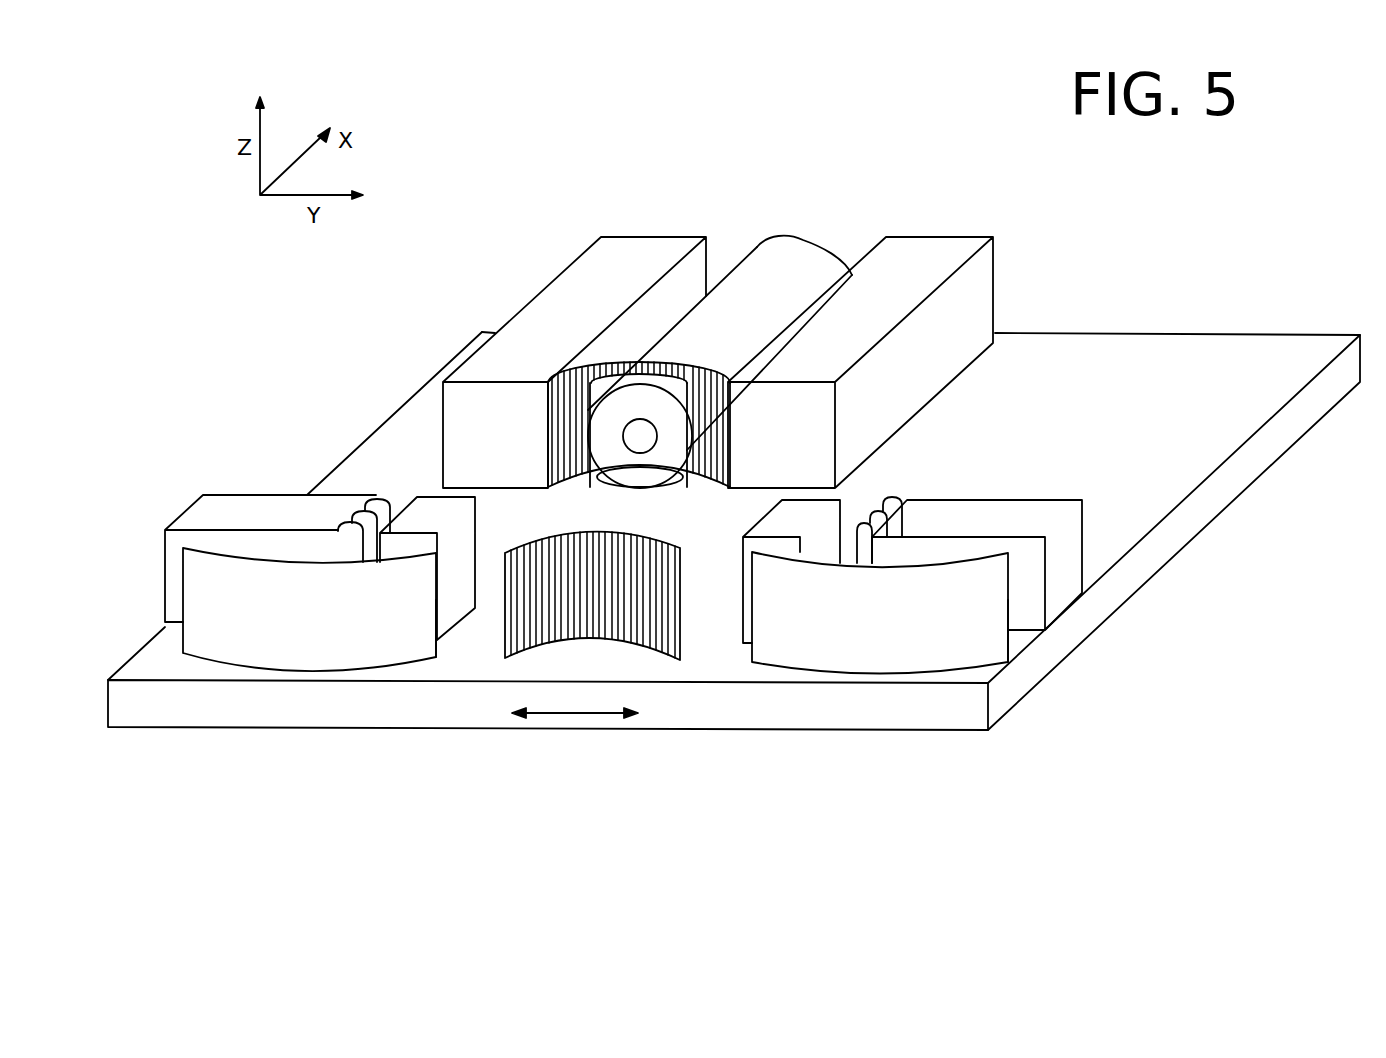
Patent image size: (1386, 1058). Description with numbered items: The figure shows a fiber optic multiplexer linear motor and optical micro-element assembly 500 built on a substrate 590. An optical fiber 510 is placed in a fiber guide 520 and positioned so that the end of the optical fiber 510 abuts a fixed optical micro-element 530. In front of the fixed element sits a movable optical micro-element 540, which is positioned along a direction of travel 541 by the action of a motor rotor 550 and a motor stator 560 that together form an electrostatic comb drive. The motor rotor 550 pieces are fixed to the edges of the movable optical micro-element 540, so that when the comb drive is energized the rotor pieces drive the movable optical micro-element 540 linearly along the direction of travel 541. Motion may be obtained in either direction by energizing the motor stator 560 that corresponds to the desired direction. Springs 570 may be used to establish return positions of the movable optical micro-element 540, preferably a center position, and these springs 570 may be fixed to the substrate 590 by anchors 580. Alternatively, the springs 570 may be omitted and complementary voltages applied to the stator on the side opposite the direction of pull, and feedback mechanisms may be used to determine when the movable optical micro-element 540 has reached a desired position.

The fiber optic multiplexer linear motor and optical micro-element assembly 500 is at (853, 201).
The optical fiber 510 is at (678, 200).
The fiber guide 520 is at (945, 239).
The fixed optical micro-element 530 is at (573, 357).
The movable optical micro-element 540 is at (505, 636).
The direction of travel 541 is at (550, 729).
The motor rotor 550 is at (910, 467).
The motor stator 560 is at (1063, 558).
The springs 570 is at (943, 558).
The anchors 580 is at (1010, 620).
The substrate 590 is at (1183, 333).